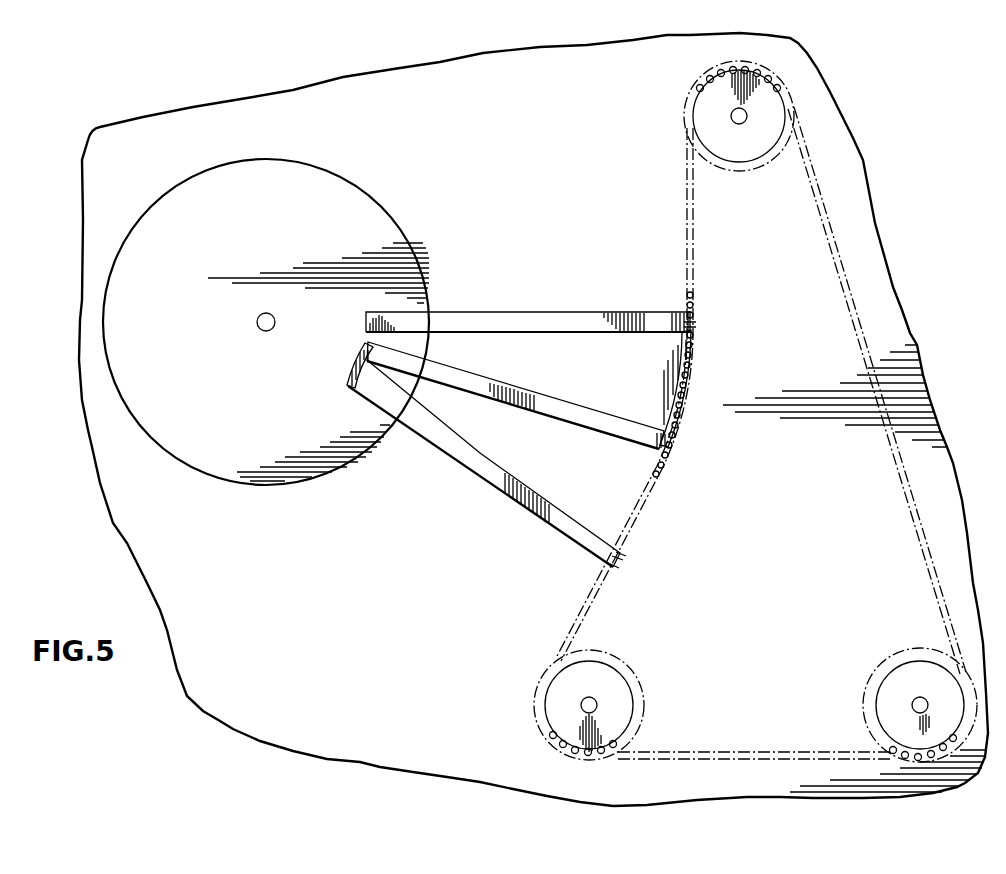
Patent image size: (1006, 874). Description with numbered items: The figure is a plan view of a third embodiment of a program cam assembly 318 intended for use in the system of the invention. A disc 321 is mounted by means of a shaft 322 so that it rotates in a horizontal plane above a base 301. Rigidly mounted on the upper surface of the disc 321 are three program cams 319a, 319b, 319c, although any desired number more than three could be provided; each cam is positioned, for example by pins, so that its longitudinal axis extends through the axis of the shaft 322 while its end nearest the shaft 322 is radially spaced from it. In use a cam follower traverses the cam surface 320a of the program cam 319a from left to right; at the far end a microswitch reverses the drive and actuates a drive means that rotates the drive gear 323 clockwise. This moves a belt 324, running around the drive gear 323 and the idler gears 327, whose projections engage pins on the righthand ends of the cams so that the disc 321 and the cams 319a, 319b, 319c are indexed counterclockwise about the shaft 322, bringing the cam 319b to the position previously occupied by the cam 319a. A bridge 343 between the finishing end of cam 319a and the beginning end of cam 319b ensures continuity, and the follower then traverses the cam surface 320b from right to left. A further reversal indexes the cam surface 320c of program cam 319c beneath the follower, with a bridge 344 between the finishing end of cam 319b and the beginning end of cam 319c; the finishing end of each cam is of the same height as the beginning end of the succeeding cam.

The base 301 is at (258, 723).
The assembly 318 is at (460, 527).
The program cam 319a is at (570, 312).
The program cam 319b is at (585, 416).
The program cam 319c is at (548, 505).
The cam surface 320a is at (528, 302).
The cam surface 320b is at (516, 395).
The cam surface 320c is at (487, 464).
The disc 321 is at (362, 207).
The shaft 322 is at (257, 322).
The drive gear 323 is at (910, 661).
The belt 324 is at (898, 470).
The idler gears 327 is at (745, 145).
The bridge 343 is at (676, 385).
The bridge 344 is at (348, 372).